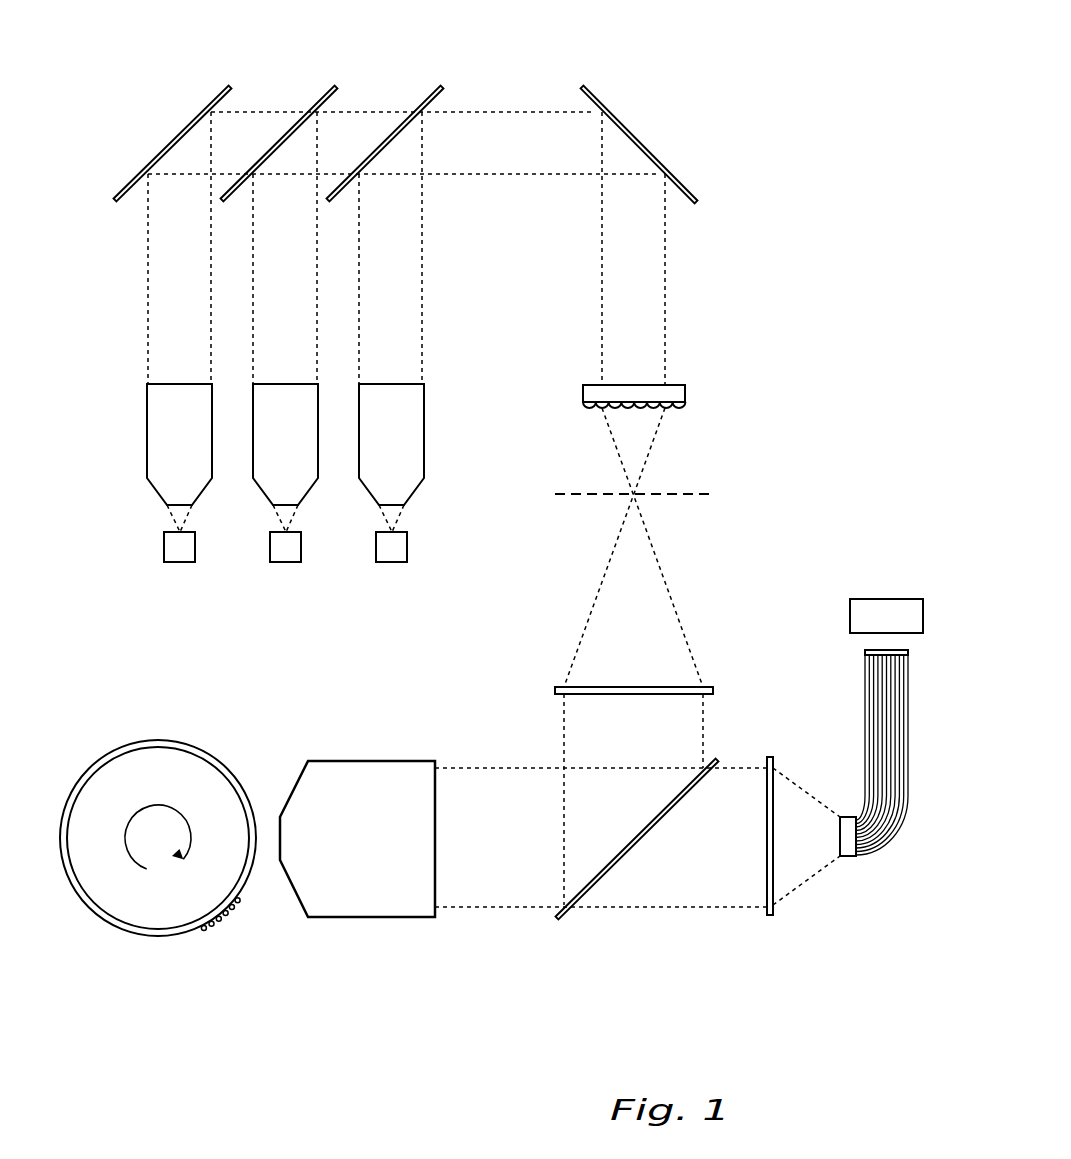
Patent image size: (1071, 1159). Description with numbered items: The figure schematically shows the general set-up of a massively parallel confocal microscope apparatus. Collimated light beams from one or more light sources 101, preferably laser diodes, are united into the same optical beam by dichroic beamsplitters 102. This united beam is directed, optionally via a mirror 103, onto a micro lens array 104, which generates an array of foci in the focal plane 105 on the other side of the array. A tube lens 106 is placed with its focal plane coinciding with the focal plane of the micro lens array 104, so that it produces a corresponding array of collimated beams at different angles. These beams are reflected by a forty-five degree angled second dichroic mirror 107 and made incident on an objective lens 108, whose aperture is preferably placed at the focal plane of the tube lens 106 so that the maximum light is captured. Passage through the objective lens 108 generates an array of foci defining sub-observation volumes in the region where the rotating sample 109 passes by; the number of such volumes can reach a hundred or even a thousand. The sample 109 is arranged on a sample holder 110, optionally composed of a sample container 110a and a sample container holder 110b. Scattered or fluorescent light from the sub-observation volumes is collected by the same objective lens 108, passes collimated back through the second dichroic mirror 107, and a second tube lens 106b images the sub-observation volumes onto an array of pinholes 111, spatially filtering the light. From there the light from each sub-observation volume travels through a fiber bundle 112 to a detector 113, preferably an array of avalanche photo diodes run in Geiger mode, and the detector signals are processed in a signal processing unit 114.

The light source 101 is at (180, 562).
The dichroic beamsplitter 102 is at (177, 137).
The mirror 103 is at (632, 130).
The micro lens array 104 is at (678, 382).
The focal plane 105 is at (560, 495).
The tube lens 106 is at (682, 687).
The second tube lens 106b is at (773, 905).
The second dichroic mirror 107 is at (618, 867).
The objective lens 108 is at (383, 760).
The rotating sample 109 is at (228, 915).
The sample holder 110 is at (80, 942).
The sample container 110a is at (152, 937).
The sample container holder 110b is at (115, 785).
The array of pinholes 111 is at (850, 817).
The fiber bundle 112 is at (897, 860).
The detector 113 is at (865, 652).
The signal processing unit 114 is at (857, 597).